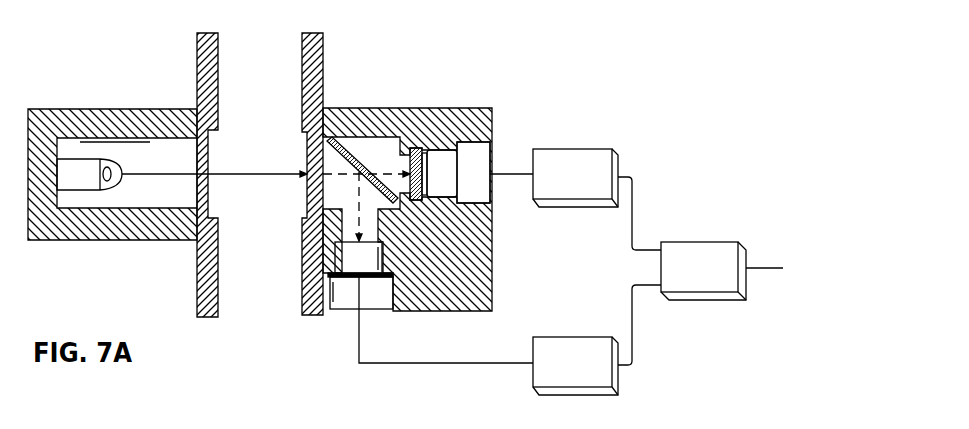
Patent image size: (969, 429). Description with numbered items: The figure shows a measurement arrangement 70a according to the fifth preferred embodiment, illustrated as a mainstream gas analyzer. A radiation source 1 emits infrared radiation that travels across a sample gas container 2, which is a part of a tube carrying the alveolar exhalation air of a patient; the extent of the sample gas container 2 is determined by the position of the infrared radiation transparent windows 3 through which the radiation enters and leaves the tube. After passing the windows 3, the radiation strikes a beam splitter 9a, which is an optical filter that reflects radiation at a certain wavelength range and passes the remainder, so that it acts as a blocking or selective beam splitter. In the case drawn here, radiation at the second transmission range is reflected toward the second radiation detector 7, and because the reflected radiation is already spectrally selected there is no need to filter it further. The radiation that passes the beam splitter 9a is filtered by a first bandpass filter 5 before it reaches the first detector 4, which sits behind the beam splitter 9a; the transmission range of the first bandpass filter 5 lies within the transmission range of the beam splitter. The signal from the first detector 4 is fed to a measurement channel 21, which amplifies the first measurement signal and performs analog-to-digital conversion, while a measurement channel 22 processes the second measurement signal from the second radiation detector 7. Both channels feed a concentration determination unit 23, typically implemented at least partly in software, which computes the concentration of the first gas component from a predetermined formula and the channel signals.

The radiation source 1 is at (112, 162).
The sample gas container 2 is at (253, 229).
The infrared radiation transparent windows 3 is at (212, 144).
The first detector 4 is at (470, 127).
The first bandpass filter 5 is at (437, 160).
The second radiation detector 7 is at (366, 262).
The beam splitter 9a is at (344, 140).
The measurement channel 21 is at (575, 149).
The measurement channel 22 is at (575, 337).
The concentration determination unit 23 is at (685, 242).
The measurement arrangement 70a is at (562, 80).